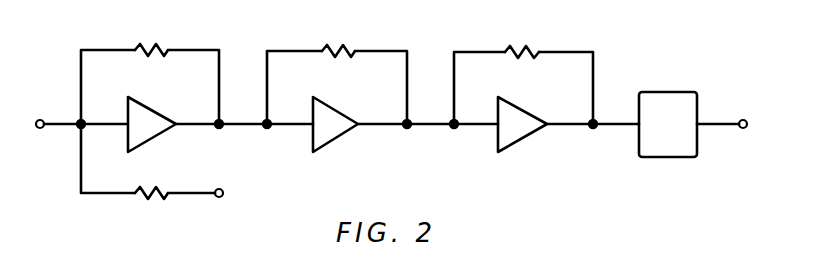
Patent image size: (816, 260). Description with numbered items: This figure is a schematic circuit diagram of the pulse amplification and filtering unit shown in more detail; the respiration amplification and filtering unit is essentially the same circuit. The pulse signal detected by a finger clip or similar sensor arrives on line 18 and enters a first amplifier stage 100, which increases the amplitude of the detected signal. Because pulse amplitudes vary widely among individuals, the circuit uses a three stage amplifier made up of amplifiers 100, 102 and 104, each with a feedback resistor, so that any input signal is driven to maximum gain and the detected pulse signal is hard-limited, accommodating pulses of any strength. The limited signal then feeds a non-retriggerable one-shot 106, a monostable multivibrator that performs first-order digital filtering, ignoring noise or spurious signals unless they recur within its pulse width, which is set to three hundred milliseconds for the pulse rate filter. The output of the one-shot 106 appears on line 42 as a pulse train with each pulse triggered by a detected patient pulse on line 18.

The line 18 is at (58, 118).
The first amplifier stage 100 is at (151, 137).
The amplifier 102 is at (337, 137).
The amplifier 104 is at (523, 137).
The one-shot 106 is at (667, 92).
The line 42 is at (708, 122).